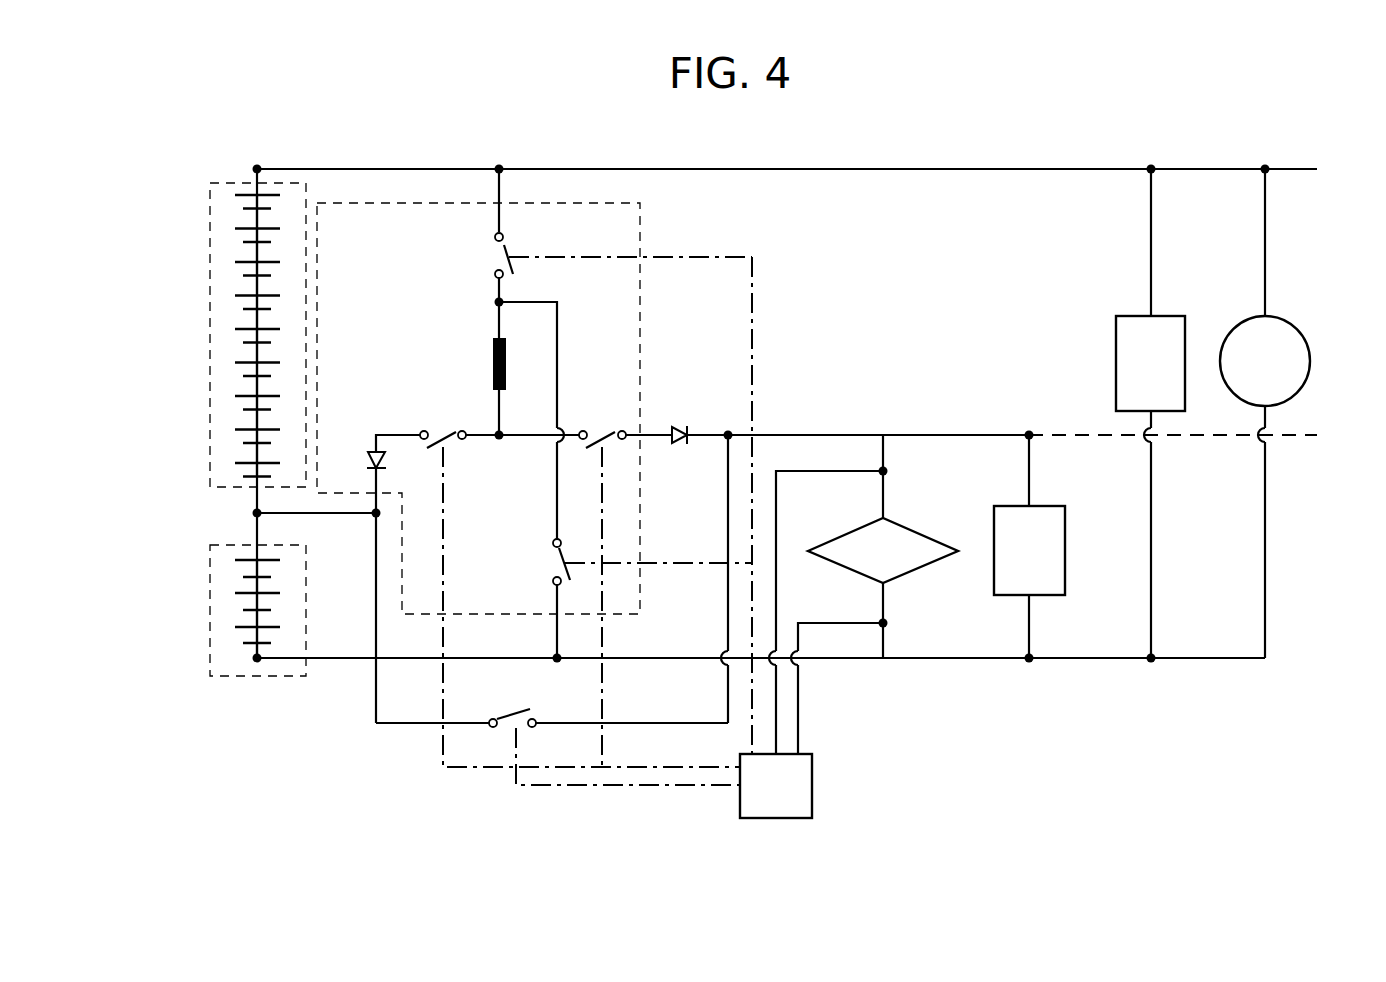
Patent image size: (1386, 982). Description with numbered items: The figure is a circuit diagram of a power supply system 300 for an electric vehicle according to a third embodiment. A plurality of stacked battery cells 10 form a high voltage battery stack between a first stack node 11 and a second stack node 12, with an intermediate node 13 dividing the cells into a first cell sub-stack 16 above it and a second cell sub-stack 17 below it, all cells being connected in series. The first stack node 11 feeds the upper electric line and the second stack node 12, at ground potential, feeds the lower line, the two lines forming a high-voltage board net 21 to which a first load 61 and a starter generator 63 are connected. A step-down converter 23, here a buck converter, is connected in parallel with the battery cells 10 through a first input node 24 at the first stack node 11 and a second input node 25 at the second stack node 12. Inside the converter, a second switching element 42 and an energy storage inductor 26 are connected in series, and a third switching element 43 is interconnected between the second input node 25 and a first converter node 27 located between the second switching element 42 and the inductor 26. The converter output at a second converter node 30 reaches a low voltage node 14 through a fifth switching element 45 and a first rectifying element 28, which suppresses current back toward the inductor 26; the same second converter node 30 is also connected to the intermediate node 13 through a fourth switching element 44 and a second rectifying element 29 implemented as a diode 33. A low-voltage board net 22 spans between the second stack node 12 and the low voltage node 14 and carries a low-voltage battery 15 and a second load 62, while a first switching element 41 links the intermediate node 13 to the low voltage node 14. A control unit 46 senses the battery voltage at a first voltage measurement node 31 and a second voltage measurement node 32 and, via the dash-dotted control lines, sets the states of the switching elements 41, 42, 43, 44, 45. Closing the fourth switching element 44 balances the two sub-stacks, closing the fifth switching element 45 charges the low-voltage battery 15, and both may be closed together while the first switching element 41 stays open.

The power supply system 300 is at (222, 137).
The battery cells 10 is at (250, 308).
The first stack node 11 is at (258, 164).
The second stack node 12 is at (257, 659).
The intermediate node 13 is at (257, 513).
The low voltage node 14 is at (728, 431).
The low-voltage battery 15 is at (871, 564).
The first cell sub-stack 16 is at (210, 238).
The second cell sub-stack 17 is at (210, 628).
The high-voltage board net 21 is at (955, 166).
The low-voltage board net 22 is at (968, 432).
The step-down converter 23 is at (642, 227).
The first input node 24 is at (499, 166).
The second input node 25 is at (556, 656).
The energy storage inductor 26 is at (493, 364).
The first converter node 27 is at (499, 302).
The first rectifying element 28 is at (678, 427).
The second rectifying element 29 is at (525, 544).
The second converter node 30 is at (499, 440).
The first voltage measurement node 31 is at (883, 471).
The second voltage measurement node 32 is at (883, 623).
The diode 33 is at (373, 451).
The first switching element 41 is at (503, 716).
The second switching element 42 is at (510, 250).
The third switching element 43 is at (559, 562).
The fourth switching element 44 is at (440, 433).
The fifth switching element 45 is at (604, 436).
The control unit 46 is at (764, 799).
The first load 61 is at (1139, 373).
The second load 62 is at (1017, 563).
The starter generator 63 is at (1253, 373).